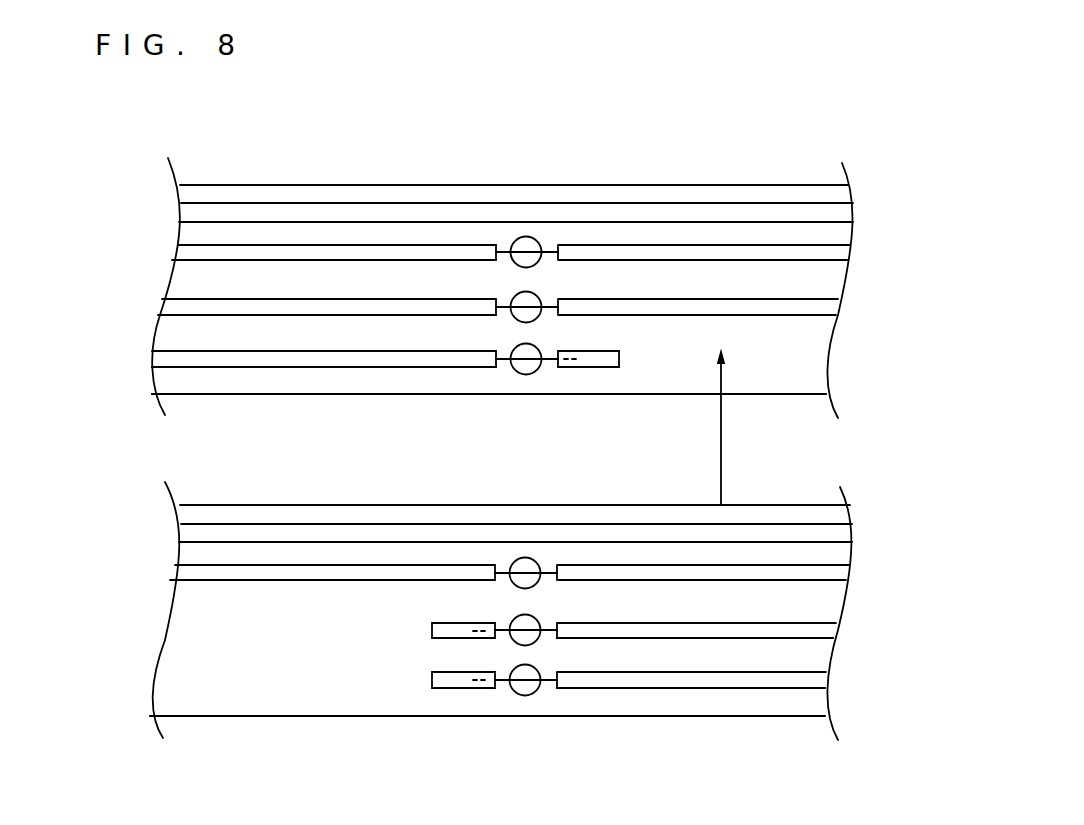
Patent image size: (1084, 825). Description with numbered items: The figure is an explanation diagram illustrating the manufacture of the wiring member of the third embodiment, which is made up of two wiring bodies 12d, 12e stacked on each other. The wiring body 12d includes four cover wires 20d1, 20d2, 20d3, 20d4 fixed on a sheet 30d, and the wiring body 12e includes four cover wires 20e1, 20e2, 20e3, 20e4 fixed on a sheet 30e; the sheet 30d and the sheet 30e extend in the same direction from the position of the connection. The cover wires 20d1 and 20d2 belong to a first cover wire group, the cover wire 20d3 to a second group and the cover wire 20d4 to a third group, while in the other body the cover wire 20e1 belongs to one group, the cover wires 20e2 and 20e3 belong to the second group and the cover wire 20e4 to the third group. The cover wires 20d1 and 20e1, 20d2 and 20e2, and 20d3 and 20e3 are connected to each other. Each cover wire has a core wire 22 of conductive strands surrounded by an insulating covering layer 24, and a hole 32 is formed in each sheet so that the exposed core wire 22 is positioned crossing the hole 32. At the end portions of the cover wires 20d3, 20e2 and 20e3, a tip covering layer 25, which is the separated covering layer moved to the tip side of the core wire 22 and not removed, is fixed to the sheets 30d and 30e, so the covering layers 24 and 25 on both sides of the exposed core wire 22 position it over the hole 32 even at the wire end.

The wiring body 12d is at (405, 183).
The wiring body 12e is at (312, 718).
The cover wire 20d1 is at (185, 255).
The cover wire 20d2 is at (172, 310).
The cover wire 20d3 is at (165, 360).
The cover wire 20d4 is at (193, 214).
The cover wire 20e1 is at (185, 575).
The cover wire 20e2 is at (822, 632).
The cover wire 20e3 is at (812, 683).
The cover wire 20e4 is at (192, 534).
The core wire 22 is at (566, 372).
The covering layer 24 is at (330, 360).
The tip covering layer 25 is at (608, 370).
The sheet 30d is at (427, 398).
The sheet 30e is at (375, 718).
The hole 32 is at (530, 375).